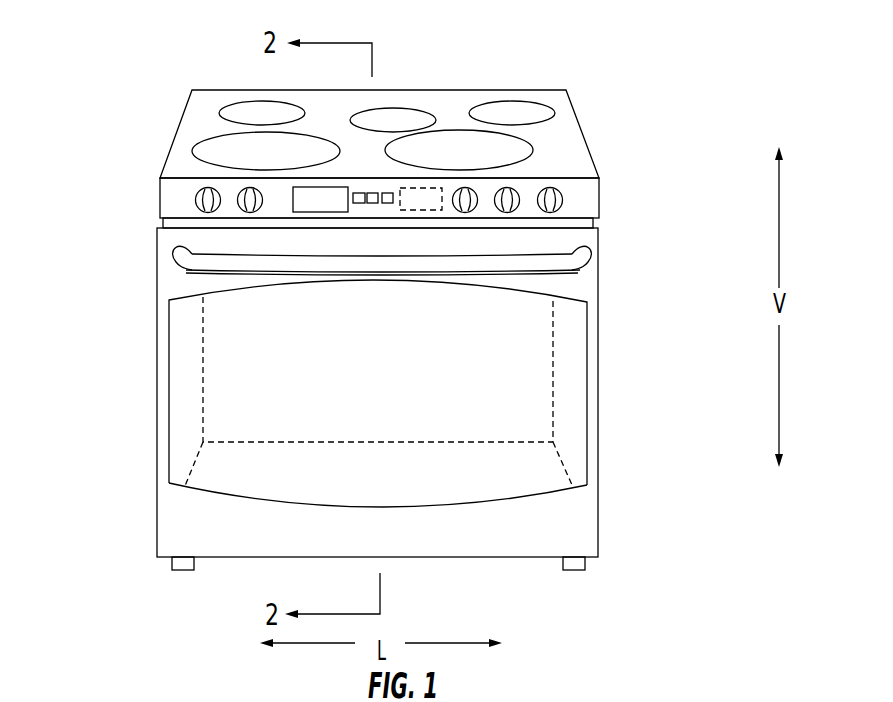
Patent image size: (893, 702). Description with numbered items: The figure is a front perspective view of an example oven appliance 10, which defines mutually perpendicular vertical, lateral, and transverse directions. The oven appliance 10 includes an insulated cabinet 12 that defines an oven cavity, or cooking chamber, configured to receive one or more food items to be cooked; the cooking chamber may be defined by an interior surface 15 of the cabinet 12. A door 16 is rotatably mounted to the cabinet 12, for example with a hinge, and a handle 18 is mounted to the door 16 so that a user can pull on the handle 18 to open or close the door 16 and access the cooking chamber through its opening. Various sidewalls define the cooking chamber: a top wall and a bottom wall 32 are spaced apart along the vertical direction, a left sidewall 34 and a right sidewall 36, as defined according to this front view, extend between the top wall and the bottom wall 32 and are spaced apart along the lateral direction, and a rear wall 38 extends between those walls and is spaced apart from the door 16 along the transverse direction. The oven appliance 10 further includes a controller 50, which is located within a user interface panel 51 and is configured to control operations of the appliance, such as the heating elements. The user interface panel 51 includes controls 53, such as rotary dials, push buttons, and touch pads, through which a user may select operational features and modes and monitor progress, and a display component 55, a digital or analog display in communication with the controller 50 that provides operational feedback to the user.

The oven appliance 10 is at (634, 70).
The cabinet 12 is at (375, 192).
The interior surface 15 is at (222, 468).
The door 16 is at (375, 392).
The handle 18 is at (180, 273).
The bottom wall 32 is at (452, 495).
The left sidewall 34 is at (190, 380).
The right sidewall 36 is at (567, 383).
The rear wall 38 is at (510, 330).
The controller 50 is at (427, 188).
The user interface panel 51 is at (372, 206).
The controls 53 is at (553, 186).
The display component 55 is at (338, 187).